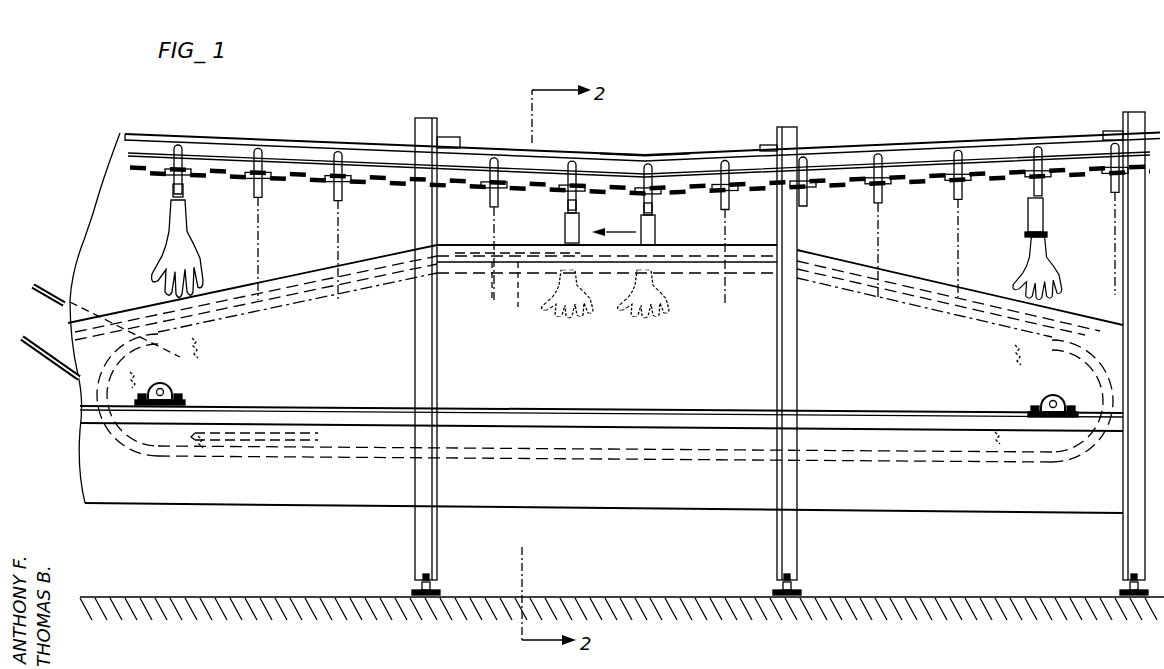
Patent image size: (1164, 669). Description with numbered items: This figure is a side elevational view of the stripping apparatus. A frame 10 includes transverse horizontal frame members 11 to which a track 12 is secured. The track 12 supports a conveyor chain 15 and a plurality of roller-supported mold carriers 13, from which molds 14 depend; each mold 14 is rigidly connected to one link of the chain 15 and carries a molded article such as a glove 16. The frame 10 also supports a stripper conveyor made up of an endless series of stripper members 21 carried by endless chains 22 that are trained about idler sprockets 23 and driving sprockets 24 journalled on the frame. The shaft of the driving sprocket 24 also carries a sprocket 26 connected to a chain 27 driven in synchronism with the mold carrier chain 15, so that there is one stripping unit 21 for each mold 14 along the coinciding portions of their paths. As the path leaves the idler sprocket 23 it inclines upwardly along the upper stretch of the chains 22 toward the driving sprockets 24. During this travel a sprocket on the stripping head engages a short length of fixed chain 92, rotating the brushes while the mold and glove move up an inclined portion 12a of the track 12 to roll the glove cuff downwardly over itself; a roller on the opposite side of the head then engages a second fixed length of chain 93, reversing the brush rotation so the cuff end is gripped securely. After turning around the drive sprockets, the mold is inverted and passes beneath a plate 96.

The frame 10 is at (431, 531).
The transverse horizontal frame members 11 is at (572, 413).
The track 12 is at (880, 136).
The inclined portion of the supporting track 12a is at (623, 152).
The roller-supported mold carriers 13 is at (182, 182).
The molds 14 is at (178, 227).
The conveyor chain 15 is at (740, 195).
The glove 16 is at (1042, 245).
The stripper members 21 is at (277, 292).
The endless chains 22 is at (963, 322).
The idler sprockets 23 is at (993, 390).
The driving sprockets 24 is at (200, 362).
The sprocket 26 is at (188, 387).
The chain 27 is at (65, 268).
The fixed chain 92 is at (625, 315).
The second fixed length of chain 93 is at (517, 286).
The plate 96 is at (303, 435).